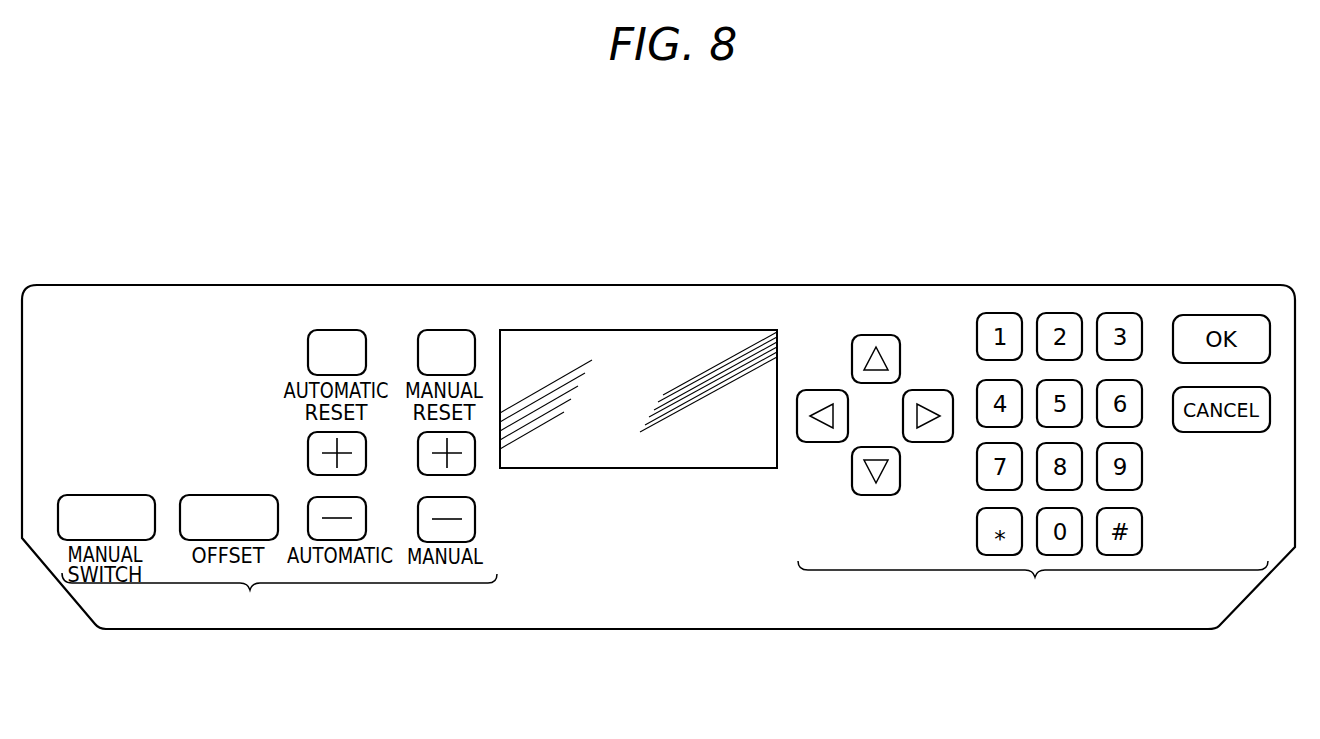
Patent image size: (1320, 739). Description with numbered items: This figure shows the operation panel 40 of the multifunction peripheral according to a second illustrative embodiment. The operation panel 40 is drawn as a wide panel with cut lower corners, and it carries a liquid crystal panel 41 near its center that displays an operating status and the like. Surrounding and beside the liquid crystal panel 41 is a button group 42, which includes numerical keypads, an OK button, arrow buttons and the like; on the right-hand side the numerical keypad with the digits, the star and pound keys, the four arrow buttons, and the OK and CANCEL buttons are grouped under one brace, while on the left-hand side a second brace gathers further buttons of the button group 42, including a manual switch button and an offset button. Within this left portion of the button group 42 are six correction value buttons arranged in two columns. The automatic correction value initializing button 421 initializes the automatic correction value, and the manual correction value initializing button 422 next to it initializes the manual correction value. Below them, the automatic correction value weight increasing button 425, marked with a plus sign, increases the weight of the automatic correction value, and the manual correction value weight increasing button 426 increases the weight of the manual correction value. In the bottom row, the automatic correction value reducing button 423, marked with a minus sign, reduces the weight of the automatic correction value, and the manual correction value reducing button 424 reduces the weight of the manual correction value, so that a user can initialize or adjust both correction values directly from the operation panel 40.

The operation panel 40 is at (1108, 297).
The liquid crystal panel 41 is at (682, 342).
The button group 42 is at (665, 589).
The automatic correction value initializing button 421 is at (336, 330).
The manual correction value initializing button 422 is at (452, 330).
The automatic correction value reducing button 423 is at (310, 500).
The manual correction value reducing button 424 is at (475, 515).
The automatic correction value weight increasing button 425 is at (307, 438).
The manual correction value weight increasing button 426 is at (468, 432).